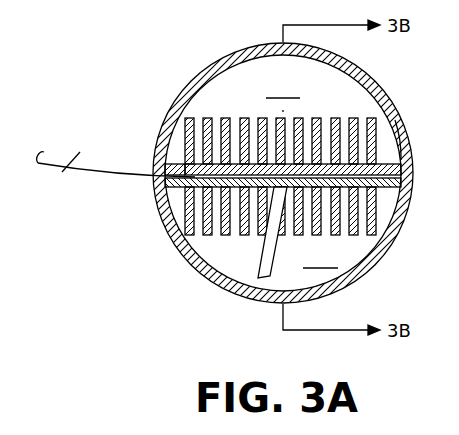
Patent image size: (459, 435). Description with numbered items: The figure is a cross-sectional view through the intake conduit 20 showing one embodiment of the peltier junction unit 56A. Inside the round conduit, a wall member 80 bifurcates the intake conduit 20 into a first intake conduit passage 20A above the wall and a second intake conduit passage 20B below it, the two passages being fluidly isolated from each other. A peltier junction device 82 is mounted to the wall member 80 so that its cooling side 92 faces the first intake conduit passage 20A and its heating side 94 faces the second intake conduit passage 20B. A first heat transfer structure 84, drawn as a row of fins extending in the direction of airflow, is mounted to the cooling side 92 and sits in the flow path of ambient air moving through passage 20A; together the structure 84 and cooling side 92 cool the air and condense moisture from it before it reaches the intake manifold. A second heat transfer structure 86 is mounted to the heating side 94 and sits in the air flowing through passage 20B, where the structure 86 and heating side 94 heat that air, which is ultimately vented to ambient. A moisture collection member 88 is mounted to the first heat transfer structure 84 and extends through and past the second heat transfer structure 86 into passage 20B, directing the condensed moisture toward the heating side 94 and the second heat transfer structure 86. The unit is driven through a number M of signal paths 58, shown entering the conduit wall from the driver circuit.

The intake conduit 20 is at (216, 62).
The first intake conduit passage 20A is at (284, 87).
The second intake conduit passage 20B is at (320, 257).
The peltier junction unit 56A is at (338, 98).
The signal paths 58 is at (80, 172).
The number of signal paths M is at (71, 152).
The wall member 80 is at (400, 169).
The peltier junction device 82 is at (402, 150).
The first heat transfer structure 84 is at (186, 126).
The second heat transfer structure 86 is at (378, 206).
The moisture collection member 88 is at (262, 258).
The cooling side 92 is at (168, 166).
The heating side 94 is at (170, 187).